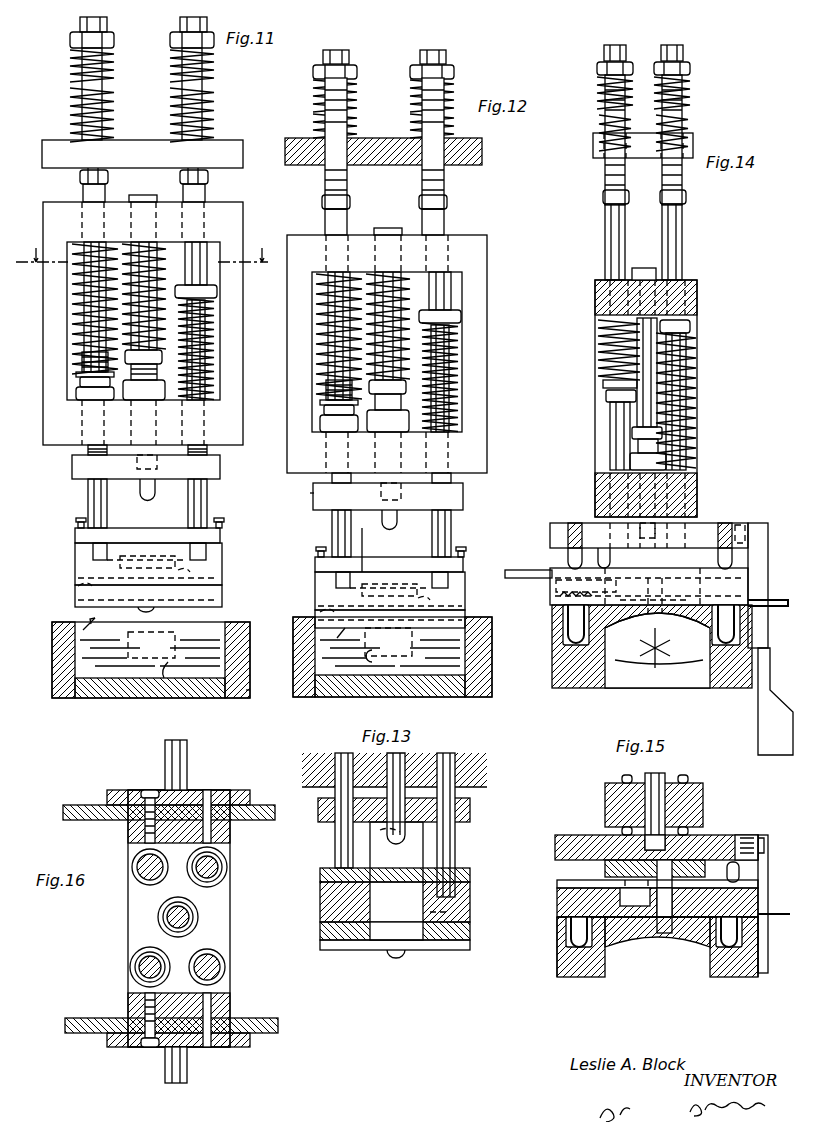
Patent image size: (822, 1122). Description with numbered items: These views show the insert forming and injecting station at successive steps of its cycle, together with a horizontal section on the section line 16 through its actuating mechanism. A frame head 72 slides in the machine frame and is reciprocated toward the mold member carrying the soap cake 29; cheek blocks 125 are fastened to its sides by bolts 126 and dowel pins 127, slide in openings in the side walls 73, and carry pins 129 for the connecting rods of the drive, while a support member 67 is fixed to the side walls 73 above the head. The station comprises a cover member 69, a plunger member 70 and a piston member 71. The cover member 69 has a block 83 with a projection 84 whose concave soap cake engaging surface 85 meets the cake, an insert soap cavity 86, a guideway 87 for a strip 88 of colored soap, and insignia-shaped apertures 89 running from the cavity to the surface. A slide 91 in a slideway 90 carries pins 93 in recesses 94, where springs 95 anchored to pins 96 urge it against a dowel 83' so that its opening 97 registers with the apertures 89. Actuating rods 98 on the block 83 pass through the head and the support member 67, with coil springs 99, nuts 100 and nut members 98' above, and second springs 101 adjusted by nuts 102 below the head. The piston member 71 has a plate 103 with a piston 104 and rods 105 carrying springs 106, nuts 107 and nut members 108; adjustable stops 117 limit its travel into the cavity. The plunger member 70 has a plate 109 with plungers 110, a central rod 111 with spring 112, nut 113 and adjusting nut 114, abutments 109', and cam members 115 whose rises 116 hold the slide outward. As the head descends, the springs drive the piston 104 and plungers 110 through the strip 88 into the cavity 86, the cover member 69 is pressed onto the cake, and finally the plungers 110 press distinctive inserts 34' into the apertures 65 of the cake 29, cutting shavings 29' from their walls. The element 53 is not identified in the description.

In FIG. 11, the section line 16 is at (144, 252).
In FIG. 11, the soap cake 29 is at (128, 680).
In FIG. 12, the soap cake 29 is at (350, 674).
In FIG. 14, the soap cake 29 is at (649, 667).
In FIG. 14, the shaving 29' is at (662, 693).
In FIG. 14, the distinctive insert 34' is at (642, 675).
In FIG. 11, the container wall 53 is at (248, 690).
In FIG. 12, the container wall 53 is at (296, 682).
In FIG. 11, the aperture 65 is at (172, 662).
In FIG. 12, the aperture 65 is at (370, 660).
In FIG. 11, the support member 67 is at (60, 146).
In FIG. 12, the support member 67 is at (298, 138).
In FIG. 14, the support member 67 is at (590, 142).
In FIG. 11, the cover member 69 is at (60, 652).
In FIG. 12, the cover member 69 is at (312, 662).
In FIG. 14, the cover member 69 is at (554, 564).
In FIG. 15, the cover member 69 is at (766, 940).
In FIG. 13, the cover member 69 is at (316, 889).
In FIG. 11, the plunger member 70 is at (70, 470).
In FIG. 12, the plunger member 70 is at (464, 490).
In FIG. 14, the plunger member 70 is at (574, 510).
In FIG. 15, the plunger member 70 is at (744, 832).
In FIG. 13, the plunger member 70 is at (318, 802).
In FIG. 11, the piston member 71 is at (110, 516).
In FIG. 12, the piston member 71 is at (316, 564).
In FIG. 14, the piston member 71 is at (708, 542).
In FIG. 15, the piston member 71 is at (650, 852).
In FIG. 13, the piston member 71 is at (470, 882).
In FIG. 11, the frame head 72 is at (50, 216).
In FIG. 12, the frame head 72 is at (290, 236).
In FIG. 14, the frame head 72 is at (696, 290).
In FIG. 15, the frame head 72 is at (606, 800).
In FIG. 13, the frame head 72 is at (472, 787).
In FIG. 16, the frame head 72 is at (132, 919).
In FIG. 16, the side wall 73 is at (72, 805).
In FIG. 11, the block 83 is at (127, 564).
In FIG. 12, the block 83 is at (370, 591).
In FIG. 14, the block 83 is at (674, 586).
In FIG. 15, the block 83 is at (641, 902).
In FIG. 14, the dowel 83' is at (543, 687).
In FIG. 15, the dowel 83' is at (584, 973).
In FIG. 13, the dowel 83' is at (402, 971).
In FIG. 11, the projection 84 is at (74, 605).
In FIG. 12, the projection 84 is at (460, 614).
In FIG. 14, the projection 84 is at (706, 674).
In FIG. 15, the projection 84 is at (712, 950).
In FIG. 13, the projection 84 is at (326, 950).
In FIG. 11, the soap cake engaging surface 85 is at (75, 622).
In FIG. 12, the soap cake engaging surface 85 is at (330, 628).
In FIG. 14, the soap cake engaging surface 85 is at (592, 674).
In FIG. 15, the soap cake engaging surface 85 is at (608, 948).
In FIG. 13, the soap cake engaging surface 85 is at (360, 950).
In FIG. 11, the insert soap cavity 86 is at (176, 568).
In FIG. 12, the insert soap cavity 86 is at (416, 576).
In FIG. 14, the insert soap cavity 86 is at (638, 604).
In FIG. 14, the guideway 87 is at (556, 582).
In FIG. 15, the guideway 87 is at (562, 884).
In FIG. 13, the guideway 87 is at (466, 914).
In FIG. 14, the strip 88 is at (536, 574).
In FIG. 11, the aperture 89 is at (220, 606).
In FIG. 12, the aperture 89 is at (468, 646).
In FIG. 14, the aperture 89 is at (590, 646).
In FIG. 15, the aperture 89 is at (660, 940).
In FIG. 13, the aperture 89 is at (430, 950).
In FIG. 11, the slideway 90 is at (196, 582).
In FIG. 12, the slideway 90 is at (436, 594).
In FIG. 14, the slideway 90 is at (754, 614).
In FIG. 15, the slideway 90 is at (572, 930).
In FIG. 13, the slideway 90 is at (462, 932).
In FIG. 11, the slide 91 is at (88, 582).
In FIG. 12, the slide 91 is at (318, 618).
In FIG. 14, the slide 91 is at (770, 596).
In FIG. 15, the slide 91 is at (778, 918).
In FIG. 13, the slide 91 is at (452, 950).
In FIG. 14, the pin 93 is at (568, 632).
In FIG. 13, the pin 93 is at (328, 920).
In FIG. 14, the recess 94 is at (602, 558).
In FIG. 14, the spring 95 is at (566, 620).
In FIG. 14, the pin 96 is at (560, 598).
In FIG. 14, the opening 97 is at (666, 596).
In FIG. 11, the actuating rod 98 is at (143, 125).
In FIG. 12, the actuating rod 98 is at (384, 156).
In FIG. 14, the actuating rod 98 is at (643, 177).
In FIG. 15, the actuating rod 98 is at (614, 795).
In FIG. 13, the actuating rod 98 is at (470, 825).
In FIG. 16, the actuating rod 98 is at (177, 916).
In FIG. 11, the nut member 98' is at (148, 182).
In FIG. 12, the nut member 98' is at (384, 206).
In FIG. 14, the nut member 98' is at (646, 203).
In FIG. 11, the coil spring 99 is at (170, 66).
In FIG. 12, the coil spring 99 is at (410, 100).
In FIG. 14, the coil spring 99 is at (594, 84).
In FIG. 11, the nut 100 is at (170, 40).
In FIG. 12, the nut 100 is at (410, 74).
In FIG. 14, the nut 100 is at (658, 46).
In FIG. 11, the coil spring 101 is at (212, 322).
In FIG. 12, the coil spring 101 is at (454, 330).
In FIG. 14, the coil spring 101 is at (688, 356).
In FIG. 11, the nut 102 is at (212, 288).
In FIG. 12, the nut 102 is at (460, 312).
In FIG. 14, the nut 102 is at (692, 328).
In FIG. 11, the plate 103 is at (74, 538).
In FIG. 12, the plate 103 is at (314, 572).
In FIG. 14, the plate 103 is at (573, 542).
In FIG. 15, the plate 103 is at (605, 870).
In FIG. 13, the plate 103 is at (322, 873).
In FIG. 12, the piston 104 is at (318, 560).
In FIG. 15, the piston 104 is at (656, 916).
In FIG. 13, the piston 104 is at (320, 898).
In FIG. 11, the actuating rod 105 is at (86, 302).
In FIG. 12, the actuating rod 105 is at (326, 356).
In FIG. 14, the actuating rod 105 is at (616, 436).
In FIG. 15, the actuating rod 105 is at (688, 778).
In FIG. 13, the actuating rod 105 is at (338, 850).
In FIG. 16, the actuating rod 105 is at (138, 860).
In FIG. 11, the coil spring 106 is at (76, 344).
In FIG. 12, the coil spring 106 is at (322, 386).
In FIG. 14, the coil spring 106 is at (600, 350).
In FIG. 11, the nut 107 is at (76, 382).
In FIG. 12, the nut 107 is at (324, 412).
In FIG. 14, the nut 107 is at (603, 384).
In FIG. 11, the nut member 108 is at (76, 400).
In FIG. 12, the nut member 108 is at (320, 424).
In FIG. 14, the nut member 108 is at (606, 398).
In FIG. 12, the plate 109 is at (280, 486).
In FIG. 14, the plate 109 is at (649, 515).
In FIG. 15, the plate 109 is at (659, 837).
In FIG. 13, the plate 109 is at (492, 812).
In FIG. 11, the abutment 109' is at (149, 500).
In FIG. 12, the abutment 109' is at (439, 521).
In FIG. 14, the abutment 109' is at (759, 519).
In FIG. 15, the abutment 109' is at (771, 867).
In FIG. 13, the abutment 109' is at (344, 822).
In FIG. 11, the plunger 110 is at (206, 508).
In FIG. 12, the plunger 110 is at (370, 530).
In FIG. 15, the plunger 110 is at (668, 930).
In FIG. 13, the plunger 110 is at (422, 854).
In FIG. 11, the actuating rod 111 is at (143, 262).
In FIG. 12, the actuating rod 111 is at (390, 276).
In FIG. 14, the actuating rod 111 is at (640, 268).
In FIG. 15, the actuating rod 111 is at (664, 802).
In FIG. 13, the actuating rod 111 is at (388, 750).
In FIG. 16, the actuating rod 111 is at (194, 916).
In FIG. 11, the coil spring 112 is at (116, 288).
In FIG. 12, the coil spring 112 is at (380, 297).
In FIG. 14, the coil spring 112 is at (690, 388).
In FIG. 11, the nut 113 is at (168, 358).
In FIG. 12, the nut 113 is at (410, 392).
In FIG. 14, the nut 113 is at (690, 422).
In FIG. 11, the adjusting nut 114 is at (196, 349).
In FIG. 12, the adjusting nut 114 is at (320, 404).
In FIG. 14, the adjusting nut 114 is at (690, 456).
In FIG. 14, the cam member 115 is at (758, 548).
In FIG. 15, the cam member 115 is at (768, 892).
In FIG. 14, the rise 116 is at (776, 710).
In FIG. 11, the adjustable stop 117 is at (222, 526).
In FIG. 12, the adjustable stop 117 is at (462, 550).
In FIG. 16, the cheek block 125 is at (192, 790).
In FIG. 16, the bolt 126 is at (142, 790).
In FIG. 16, the dowel pin 127 is at (212, 792).
In FIG. 16, the pin 129 is at (174, 748).